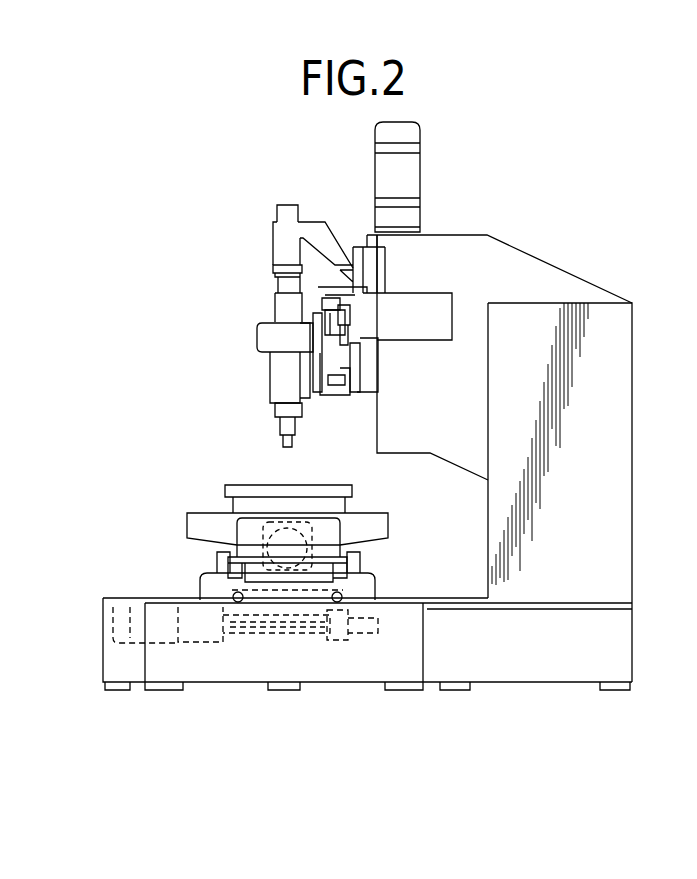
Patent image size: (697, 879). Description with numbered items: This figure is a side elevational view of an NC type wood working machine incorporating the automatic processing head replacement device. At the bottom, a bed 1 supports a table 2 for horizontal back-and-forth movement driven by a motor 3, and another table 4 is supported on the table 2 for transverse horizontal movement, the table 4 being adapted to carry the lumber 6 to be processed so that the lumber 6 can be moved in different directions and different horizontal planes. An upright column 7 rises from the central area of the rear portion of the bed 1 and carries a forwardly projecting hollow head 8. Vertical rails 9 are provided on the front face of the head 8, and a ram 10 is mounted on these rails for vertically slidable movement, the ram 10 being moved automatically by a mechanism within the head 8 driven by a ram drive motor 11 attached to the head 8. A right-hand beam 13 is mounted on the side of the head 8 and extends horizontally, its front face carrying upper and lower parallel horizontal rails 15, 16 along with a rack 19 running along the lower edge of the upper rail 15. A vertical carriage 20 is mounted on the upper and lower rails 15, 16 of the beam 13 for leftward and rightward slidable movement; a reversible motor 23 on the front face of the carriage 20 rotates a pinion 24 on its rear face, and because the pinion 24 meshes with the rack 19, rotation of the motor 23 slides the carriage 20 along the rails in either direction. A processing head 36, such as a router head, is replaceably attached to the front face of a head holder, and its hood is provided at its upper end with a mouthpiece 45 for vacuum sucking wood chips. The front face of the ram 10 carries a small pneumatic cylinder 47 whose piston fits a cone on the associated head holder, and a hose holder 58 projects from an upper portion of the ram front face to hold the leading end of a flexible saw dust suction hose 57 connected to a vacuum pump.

The bed 1 is at (217, 675).
The table 2 is at (200, 578).
The motor 3 is at (160, 640).
The table 4 is at (190, 530).
The lumber 6 is at (235, 484).
The upright column 7 is at (617, 438).
The head 8 is at (482, 263).
The vertical rails 9 is at (386, 263).
The ram 10 is at (365, 257).
The ram drive motor 11 is at (420, 162).
The right-hand beam 13 is at (353, 358).
The upper rail 15 is at (337, 322).
The lower rail 16 is at (353, 375).
The rack 19 is at (337, 327).
The carriage 20 is at (323, 358).
The reversible motor 23 is at (278, 338).
The pinion 24 is at (337, 337).
The processing head 36 is at (268, 402).
The mouthpiece 45 is at (287, 267).
The pneumatic cylinder 47 is at (333, 398).
The saw dust suction hose 57 is at (288, 210).
The hose holder 58 is at (287, 242).